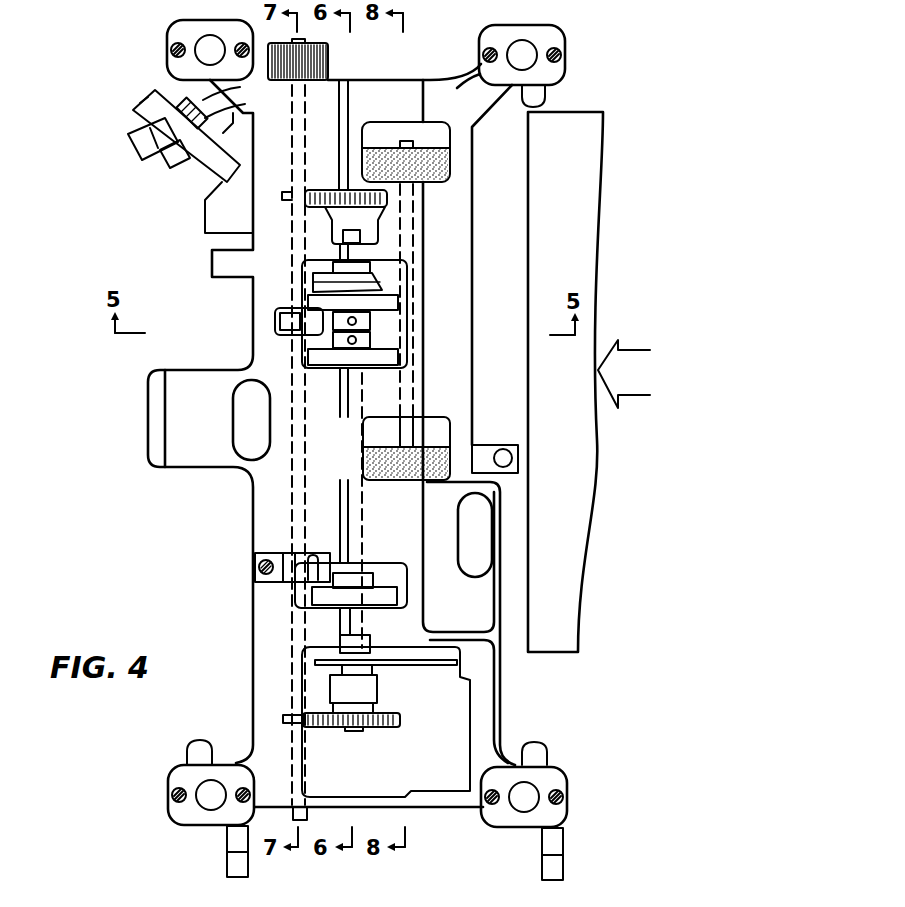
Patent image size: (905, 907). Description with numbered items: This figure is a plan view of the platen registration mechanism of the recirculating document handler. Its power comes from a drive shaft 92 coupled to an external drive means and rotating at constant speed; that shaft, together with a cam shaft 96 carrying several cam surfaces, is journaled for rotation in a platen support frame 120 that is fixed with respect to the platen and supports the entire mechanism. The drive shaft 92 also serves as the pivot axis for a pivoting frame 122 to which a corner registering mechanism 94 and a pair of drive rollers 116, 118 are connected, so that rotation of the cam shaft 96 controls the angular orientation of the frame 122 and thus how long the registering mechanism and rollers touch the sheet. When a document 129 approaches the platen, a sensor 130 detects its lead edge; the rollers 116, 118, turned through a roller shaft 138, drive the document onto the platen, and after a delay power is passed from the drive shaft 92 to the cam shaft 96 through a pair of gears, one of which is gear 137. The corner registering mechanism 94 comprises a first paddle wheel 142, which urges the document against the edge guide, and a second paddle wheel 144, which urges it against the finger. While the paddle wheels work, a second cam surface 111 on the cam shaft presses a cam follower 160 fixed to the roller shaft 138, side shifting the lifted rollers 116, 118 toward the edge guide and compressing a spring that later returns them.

The drive shaft 92 is at (293, 478).
The corner registering mechanism 94 is at (131, 88).
The cam shaft 96 is at (366, 508).
The second cam surface 111 is at (323, 277).
The drive roller 116 is at (385, 158).
The drive roller 118 is at (433, 443).
The platen support frame 120 is at (472, 250).
The pivoting frame 122 is at (212, 208).
The document 129 is at (535, 137).
The sensor 130 is at (503, 447).
The gear 137 is at (388, 725).
The roller shaft 138 is at (413, 222).
The first paddle wheel 142 is at (236, 102).
The second paddle wheel 144 is at (145, 142).
The cam follower 160 is at (385, 288).